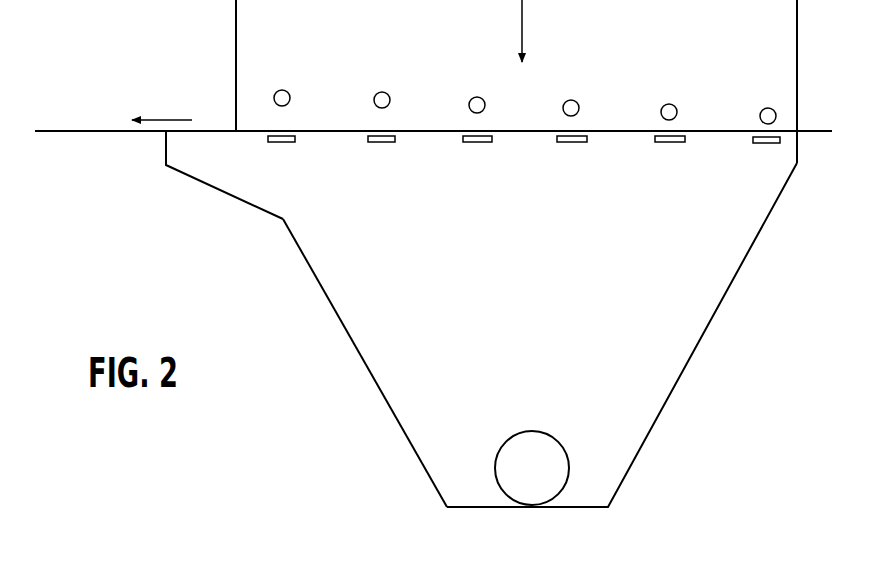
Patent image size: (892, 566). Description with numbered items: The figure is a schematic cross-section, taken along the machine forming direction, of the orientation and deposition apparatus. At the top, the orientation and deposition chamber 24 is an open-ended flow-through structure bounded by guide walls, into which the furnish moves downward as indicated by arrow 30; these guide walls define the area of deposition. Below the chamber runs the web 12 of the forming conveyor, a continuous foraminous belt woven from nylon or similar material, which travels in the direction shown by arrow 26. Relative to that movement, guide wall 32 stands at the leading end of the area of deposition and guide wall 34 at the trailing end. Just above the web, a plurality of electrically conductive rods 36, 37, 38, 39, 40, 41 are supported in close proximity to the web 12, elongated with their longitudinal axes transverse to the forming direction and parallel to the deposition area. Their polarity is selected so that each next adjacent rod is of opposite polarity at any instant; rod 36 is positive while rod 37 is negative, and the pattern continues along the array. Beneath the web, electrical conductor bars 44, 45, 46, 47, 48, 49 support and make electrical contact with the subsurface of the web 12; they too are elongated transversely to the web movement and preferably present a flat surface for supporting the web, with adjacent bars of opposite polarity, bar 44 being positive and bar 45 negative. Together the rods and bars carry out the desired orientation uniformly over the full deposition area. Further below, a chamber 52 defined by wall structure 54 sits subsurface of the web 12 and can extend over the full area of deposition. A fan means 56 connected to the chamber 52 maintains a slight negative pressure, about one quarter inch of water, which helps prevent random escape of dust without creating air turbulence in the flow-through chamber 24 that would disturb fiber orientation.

The web 12 is at (122, 133).
The orientation and deposition chamber 24 is at (231, 22).
The arrow indicating direction of movement of web 26 is at (183, 115).
The arrow indicating furnish flow 30 is at (523, 33).
The guide wall 32 is at (236, 48).
The guide wall 34 is at (797, 68).
The electrically conductive rod 36 is at (274, 100).
The electrically conductive rod 37 is at (375, 104).
The electrically conductive rod 38 is at (469, 107).
The electrically conductive rod 39 is at (563, 108).
The electrically conductive rod 40 is at (661, 113).
The electrically conductive rod 41 is at (760, 116).
The electrical conductor bar 44 is at (266, 142).
The electrical conductor bar 45 is at (368, 143).
The electrical conductor bar 46 is at (468, 143).
The electrical conductor bar 47 is at (560, 143).
The electrical conductor bar 48 is at (660, 143).
The electrical conductor bar 49 is at (755, 143).
The chamber 52 is at (505, 278).
The wall structure 54 is at (371, 372).
The fan means 56 is at (556, 442).